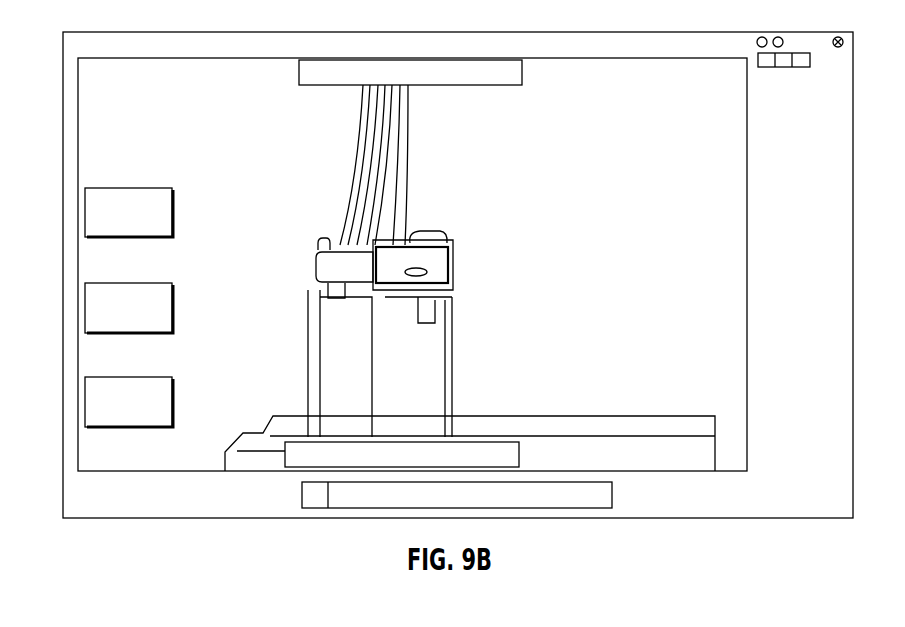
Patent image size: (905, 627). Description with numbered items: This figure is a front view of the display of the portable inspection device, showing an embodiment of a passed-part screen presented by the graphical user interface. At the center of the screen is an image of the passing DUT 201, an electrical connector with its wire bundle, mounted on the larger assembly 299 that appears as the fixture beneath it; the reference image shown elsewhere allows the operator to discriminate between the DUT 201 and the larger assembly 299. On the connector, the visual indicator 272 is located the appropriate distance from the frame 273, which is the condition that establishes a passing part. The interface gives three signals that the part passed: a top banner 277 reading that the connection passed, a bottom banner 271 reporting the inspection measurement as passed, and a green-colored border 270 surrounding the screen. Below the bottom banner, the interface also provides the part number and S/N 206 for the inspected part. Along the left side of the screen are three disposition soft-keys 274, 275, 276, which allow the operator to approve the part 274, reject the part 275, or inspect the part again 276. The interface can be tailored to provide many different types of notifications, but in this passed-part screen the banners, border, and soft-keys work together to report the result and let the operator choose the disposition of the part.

The DUT 201 is at (318, 263).
The part number and S/N 206 is at (612, 490).
The green-colored border 270 is at (78, 471).
The bottom banner 271 is at (519, 452).
The visual indicator 272 is at (457, 268).
The frame 273 is at (460, 280).
The disposition soft-key 274 is at (85, 220).
The disposition soft-key 275 is at (85, 312).
The disposition soft-key 276 is at (85, 402).
The top banner 277 is at (299, 68).
The larger assembly 299 is at (263, 433).